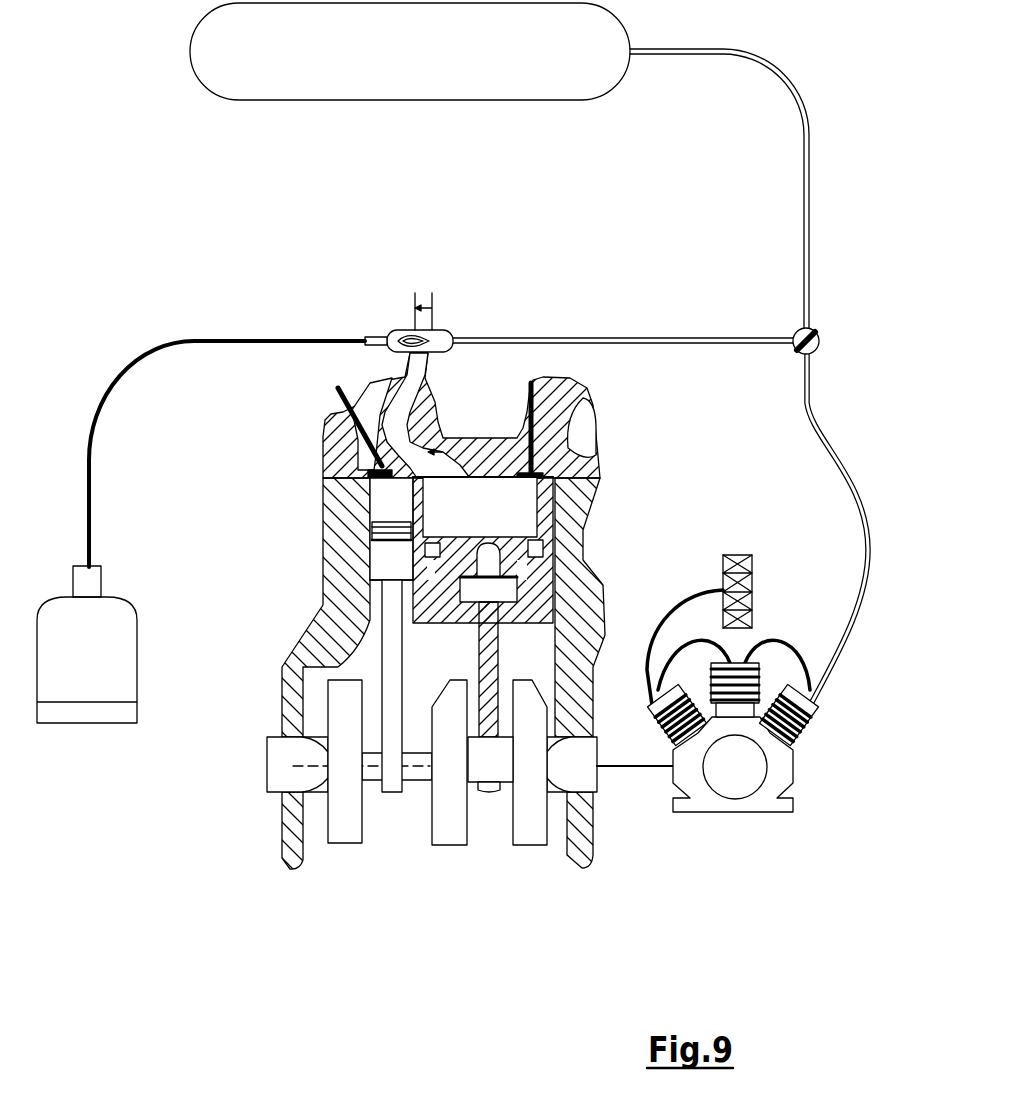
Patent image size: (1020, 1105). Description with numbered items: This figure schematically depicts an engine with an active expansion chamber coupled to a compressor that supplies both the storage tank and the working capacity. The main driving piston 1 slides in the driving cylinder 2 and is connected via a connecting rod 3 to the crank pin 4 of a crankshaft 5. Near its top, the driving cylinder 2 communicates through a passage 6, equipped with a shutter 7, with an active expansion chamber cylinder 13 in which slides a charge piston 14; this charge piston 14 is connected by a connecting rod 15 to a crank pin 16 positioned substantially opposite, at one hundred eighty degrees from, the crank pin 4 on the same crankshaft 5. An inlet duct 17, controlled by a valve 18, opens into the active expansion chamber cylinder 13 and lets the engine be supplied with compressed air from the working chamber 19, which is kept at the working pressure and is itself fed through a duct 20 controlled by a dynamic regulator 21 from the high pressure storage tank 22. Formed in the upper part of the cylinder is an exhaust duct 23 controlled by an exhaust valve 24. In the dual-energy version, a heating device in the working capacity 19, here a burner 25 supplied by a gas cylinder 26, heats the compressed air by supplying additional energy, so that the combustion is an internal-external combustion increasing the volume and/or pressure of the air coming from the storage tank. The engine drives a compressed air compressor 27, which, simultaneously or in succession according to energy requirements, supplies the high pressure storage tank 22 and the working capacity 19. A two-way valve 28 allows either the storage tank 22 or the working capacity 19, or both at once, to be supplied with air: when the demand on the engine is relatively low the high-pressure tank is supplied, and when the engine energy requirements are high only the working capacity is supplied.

The main driving piston 1 is at (515, 560).
The driving cylinder 2 is at (557, 497).
The connecting rod 3 is at (490, 640).
The crank pin 4 is at (480, 778).
The crankshaft 5 is at (270, 757).
The passage 6 is at (482, 440).
The shutter 7 is at (452, 440).
The active expansion chamber cylinder 13 is at (370, 522).
The charge piston 14 is at (388, 658).
The connecting rod 15 is at (370, 580).
The crank pin 16 is at (413, 775).
The inlet duct 17 is at (395, 356).
The valve 18 is at (367, 381).
The working chamber 19 is at (372, 337).
The duct 20 is at (400, 330).
The dynamic regulator 21 is at (433, 300).
The high pressure storage tank 22 is at (218, 60).
The exhaust duct 23 is at (578, 405).
The exhaust valve 24 is at (560, 358).
The burner 25 is at (362, 339).
The gas cylinder 26 is at (103, 685).
The compressed air compressor 27 is at (730, 767).
The two-way valve 28 is at (798, 332).